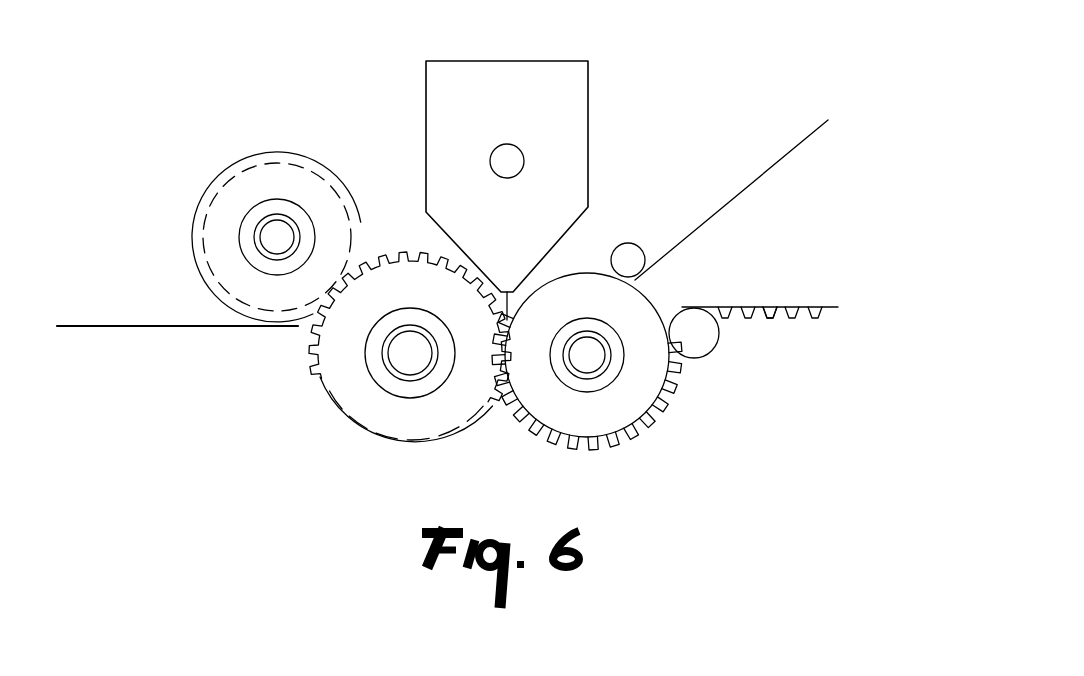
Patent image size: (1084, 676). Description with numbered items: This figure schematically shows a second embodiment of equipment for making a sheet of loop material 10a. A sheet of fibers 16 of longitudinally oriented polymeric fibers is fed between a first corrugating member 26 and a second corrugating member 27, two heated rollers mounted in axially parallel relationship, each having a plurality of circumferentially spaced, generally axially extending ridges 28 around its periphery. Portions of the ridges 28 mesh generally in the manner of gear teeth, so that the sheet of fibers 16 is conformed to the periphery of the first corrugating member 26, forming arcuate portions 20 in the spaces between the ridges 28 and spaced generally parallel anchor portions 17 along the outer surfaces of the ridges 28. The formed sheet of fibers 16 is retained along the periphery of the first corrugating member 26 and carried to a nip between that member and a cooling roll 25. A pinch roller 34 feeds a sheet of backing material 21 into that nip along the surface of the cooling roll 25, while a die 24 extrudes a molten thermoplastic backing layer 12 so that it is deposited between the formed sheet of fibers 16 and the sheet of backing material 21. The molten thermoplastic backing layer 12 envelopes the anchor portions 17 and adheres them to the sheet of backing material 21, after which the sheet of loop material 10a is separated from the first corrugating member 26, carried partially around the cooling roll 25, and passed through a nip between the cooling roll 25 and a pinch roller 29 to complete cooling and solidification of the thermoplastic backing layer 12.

The sheet of loop material 10a is at (766, 285).
The thermoplastic backing layer 12 is at (514, 297).
The sheet of fibers 16 is at (166, 310).
The anchor portions 17 is at (413, 252).
The arcuate portions 20 is at (457, 272).
The sheet of backing material 21 is at (783, 157).
The die 24 is at (573, 104).
The cooling roll 25 is at (582, 420).
The first corrugating member 26 is at (433, 427).
The second corrugating member 27 is at (234, 178).
The ridges 28 is at (357, 237).
The pinch roller 29 is at (697, 358).
The pinch roller 34 is at (637, 253).